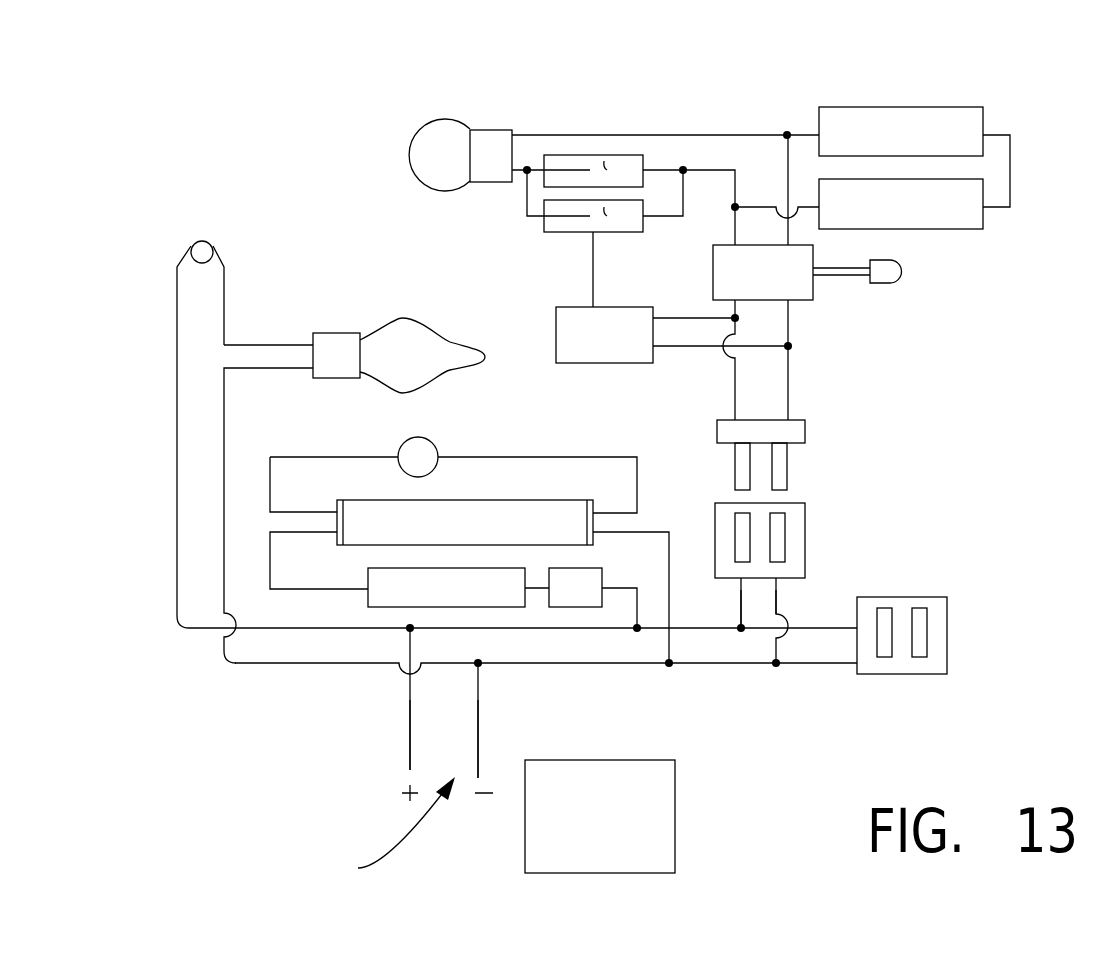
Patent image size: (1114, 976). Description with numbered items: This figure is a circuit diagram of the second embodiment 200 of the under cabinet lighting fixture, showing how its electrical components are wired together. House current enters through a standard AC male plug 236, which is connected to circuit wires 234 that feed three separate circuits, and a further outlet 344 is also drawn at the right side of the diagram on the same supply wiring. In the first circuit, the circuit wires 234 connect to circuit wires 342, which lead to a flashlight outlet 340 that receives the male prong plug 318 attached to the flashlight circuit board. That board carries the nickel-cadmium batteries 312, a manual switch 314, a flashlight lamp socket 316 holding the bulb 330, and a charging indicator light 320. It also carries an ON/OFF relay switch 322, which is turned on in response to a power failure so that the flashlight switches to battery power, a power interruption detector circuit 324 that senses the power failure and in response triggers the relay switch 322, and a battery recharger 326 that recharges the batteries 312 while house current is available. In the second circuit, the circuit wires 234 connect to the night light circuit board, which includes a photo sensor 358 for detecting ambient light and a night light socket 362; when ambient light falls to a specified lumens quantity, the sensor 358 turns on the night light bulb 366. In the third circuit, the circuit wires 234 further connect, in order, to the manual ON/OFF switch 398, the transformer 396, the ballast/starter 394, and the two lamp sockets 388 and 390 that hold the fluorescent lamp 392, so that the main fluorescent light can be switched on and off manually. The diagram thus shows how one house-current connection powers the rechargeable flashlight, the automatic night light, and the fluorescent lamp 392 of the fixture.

The second embodiment 200 is at (229, 122).
The circuit wires 234 is at (410, 737).
The standard AC male plug 236 is at (373, 832).
The batteries 312 is at (917, 200).
The manual switch 314 is at (585, 168).
The flashlight lamp socket 316 is at (497, 147).
The male prong plug 318 is at (792, 430).
The charging indicator light 320 is at (888, 273).
The ON/OFF relay switch 322 is at (598, 222).
The power interruption detector circuit 324 is at (616, 318).
The battery recharger 326 is at (802, 292).
The bulb 330 is at (448, 137).
The flashlight outlet 340 is at (793, 513).
The circuit wires 342 is at (743, 610).
The outlet receptacle 344 is at (901, 663).
The photo sensor 358 is at (197, 249).
The night light socket 362 is at (348, 340).
The night light bulb 366 is at (445, 342).
The lamp socket 388 is at (340, 520).
The lamp socket 390 is at (593, 518).
The fluorescent lamp 392 is at (513, 517).
The ballast/starter 394 is at (420, 450).
The transformer 396 is at (390, 590).
The manual ON/OFF switch 398 is at (565, 597).